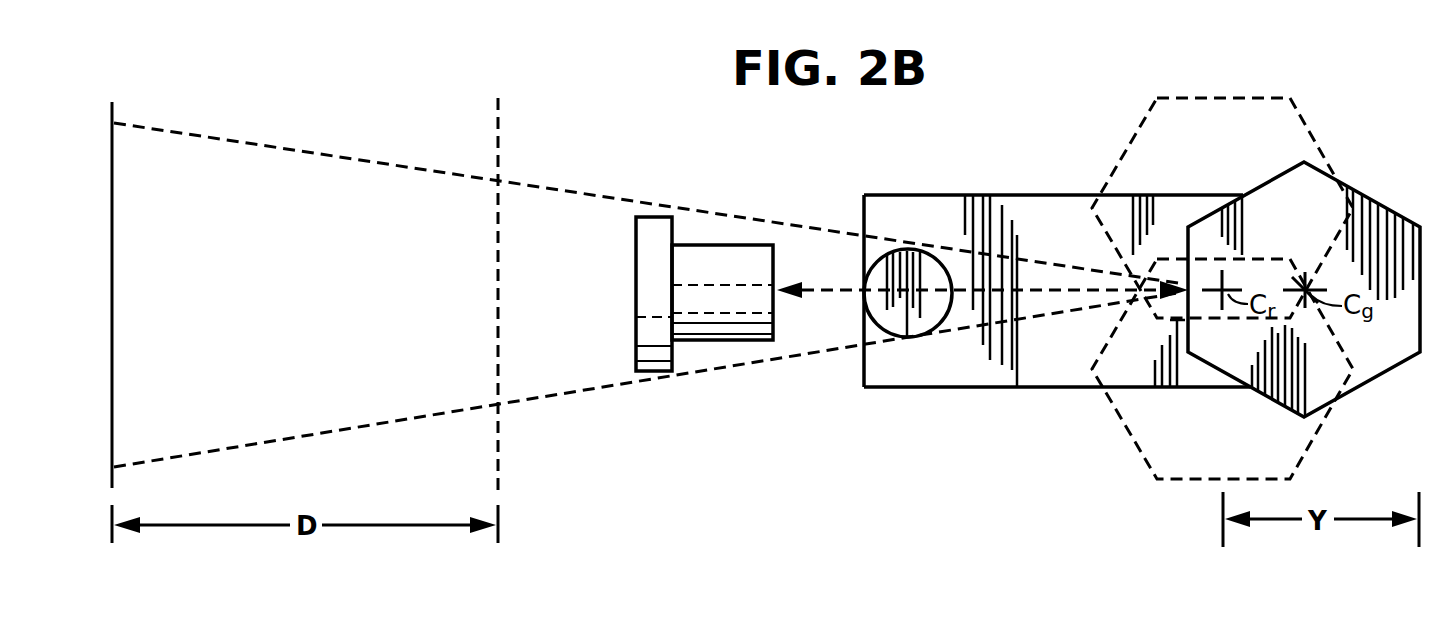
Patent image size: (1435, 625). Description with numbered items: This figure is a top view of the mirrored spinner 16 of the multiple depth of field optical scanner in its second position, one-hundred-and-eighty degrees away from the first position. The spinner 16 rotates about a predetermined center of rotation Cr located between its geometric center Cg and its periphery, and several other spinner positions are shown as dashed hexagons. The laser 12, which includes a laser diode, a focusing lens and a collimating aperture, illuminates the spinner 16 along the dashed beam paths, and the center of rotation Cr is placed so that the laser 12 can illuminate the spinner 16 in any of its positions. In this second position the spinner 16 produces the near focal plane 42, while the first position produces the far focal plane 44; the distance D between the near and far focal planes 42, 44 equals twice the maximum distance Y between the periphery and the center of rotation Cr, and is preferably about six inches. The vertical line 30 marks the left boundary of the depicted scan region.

The object plane 30 is at (113, 133).
The far focal plane 44 is at (113, 463).
The near focal plane 42 is at (498, 268).
The laser 12 is at (636, 343).
The mirrored spinner 16 is at (1348, 187).